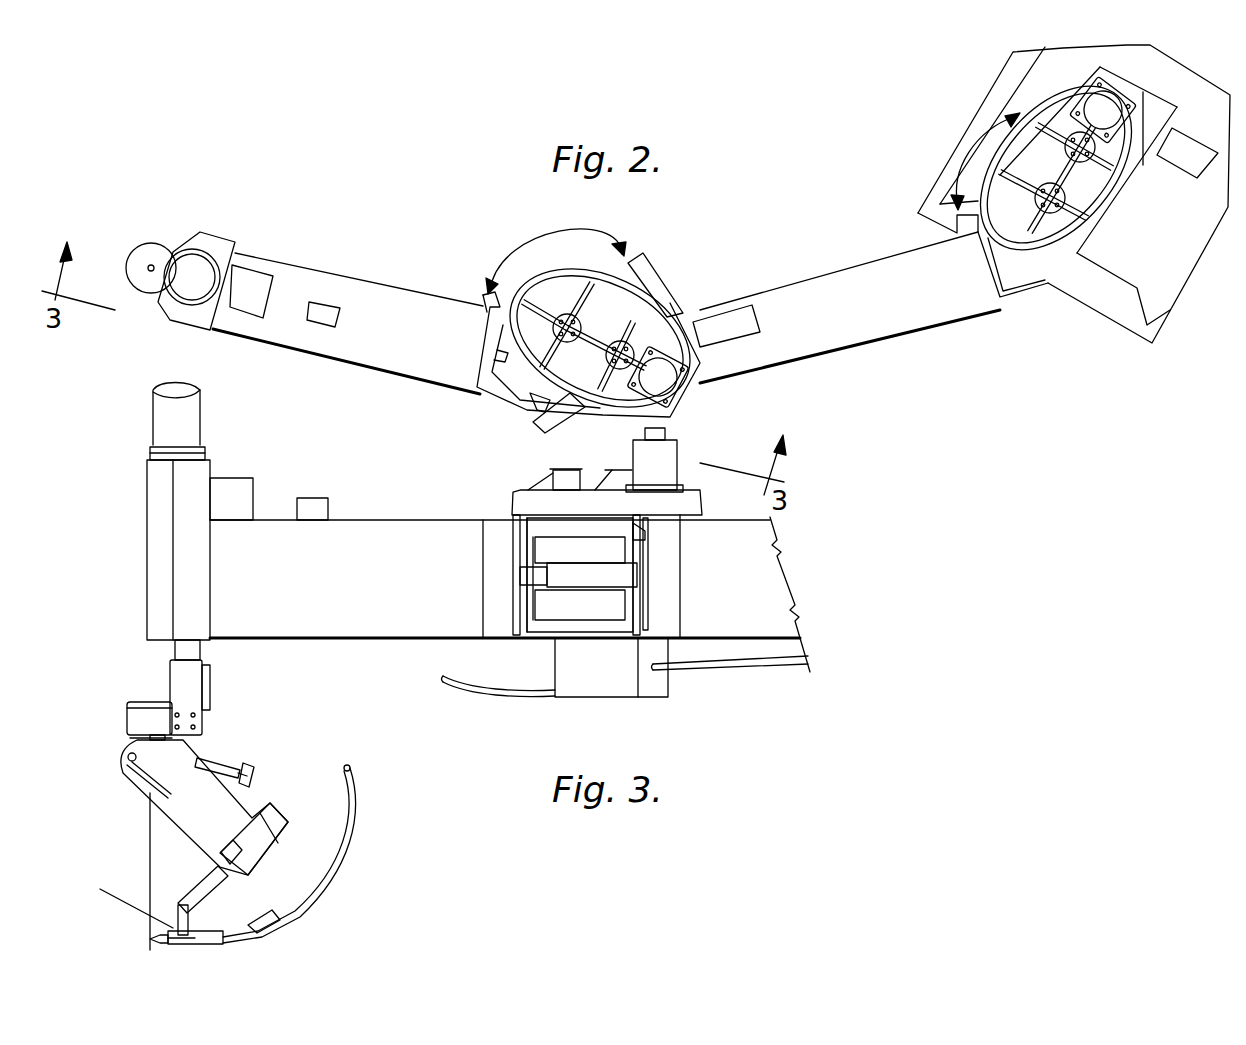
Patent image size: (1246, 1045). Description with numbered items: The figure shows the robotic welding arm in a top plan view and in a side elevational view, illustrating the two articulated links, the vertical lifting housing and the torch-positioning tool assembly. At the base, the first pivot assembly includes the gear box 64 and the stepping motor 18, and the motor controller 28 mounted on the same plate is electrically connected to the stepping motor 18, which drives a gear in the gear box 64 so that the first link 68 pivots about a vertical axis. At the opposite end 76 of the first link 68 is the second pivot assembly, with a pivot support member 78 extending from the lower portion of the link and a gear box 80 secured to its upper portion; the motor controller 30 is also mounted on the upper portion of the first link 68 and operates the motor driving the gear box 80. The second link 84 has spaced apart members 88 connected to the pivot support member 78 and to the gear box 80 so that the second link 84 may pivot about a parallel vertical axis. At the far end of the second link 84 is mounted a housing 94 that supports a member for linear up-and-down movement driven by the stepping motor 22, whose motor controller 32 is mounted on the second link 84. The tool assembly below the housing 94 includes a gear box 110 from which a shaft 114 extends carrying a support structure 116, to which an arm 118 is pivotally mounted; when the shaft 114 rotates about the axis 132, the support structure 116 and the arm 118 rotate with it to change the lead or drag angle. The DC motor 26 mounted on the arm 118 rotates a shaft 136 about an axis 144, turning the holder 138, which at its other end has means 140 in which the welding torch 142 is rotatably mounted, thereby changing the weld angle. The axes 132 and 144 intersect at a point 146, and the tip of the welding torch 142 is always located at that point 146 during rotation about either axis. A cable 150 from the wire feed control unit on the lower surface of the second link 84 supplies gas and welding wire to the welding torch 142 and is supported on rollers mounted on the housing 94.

In FIG. 2, the stepping motor 18 is at (1085, 107).
In FIG. 2, the stepping motor 22 is at (248, 278).
In FIG. 3, the stepping motor 22 is at (233, 490).
In FIG. 3, the DC motor 26 is at (282, 820).
In FIG. 2, the motor controller 28 is at (1185, 165).
In FIG. 2, the motor controller 30 is at (742, 317).
In FIG. 2, the motor controller 32 is at (320, 303).
In FIG. 3, the motor controller 32 is at (310, 505).
In FIG. 2, the gear box 64 is at (1023, 157).
In FIG. 2, the first link 68 is at (908, 318).
In FIG. 2, the opposite end of first link 76 is at (688, 296).
In FIG. 3, the pivot support member 78 is at (543, 627).
In FIG. 2, the gear box 80 is at (565, 283).
In FIG. 2, the second link 84 is at (393, 363).
In FIG. 3, the second link 84 is at (360, 588).
In FIG. 3, the spaced apart members 88 is at (543, 530).
In FIG. 3, the housing 94 is at (185, 571).
In FIG. 3, the gear box 110 is at (128, 717).
In FIG. 3, the shaft 114 is at (140, 738).
In FIG. 3, the support structure 116 is at (175, 758).
In FIG. 3, the arm 118 is at (215, 809).
In FIG. 3, the axis 132 is at (148, 832).
In FIG. 3, the shaft 136 is at (228, 863).
In FIG. 3, the holder 138 is at (185, 893).
In FIG. 3, the holding means 140 is at (212, 943).
In FIG. 3, the welding torch 142 is at (158, 940).
In FIG. 3, the axis 144 is at (117, 899).
In FIG. 3, the point 146 is at (148, 941).
In FIG. 3, the cable 150 is at (517, 683).